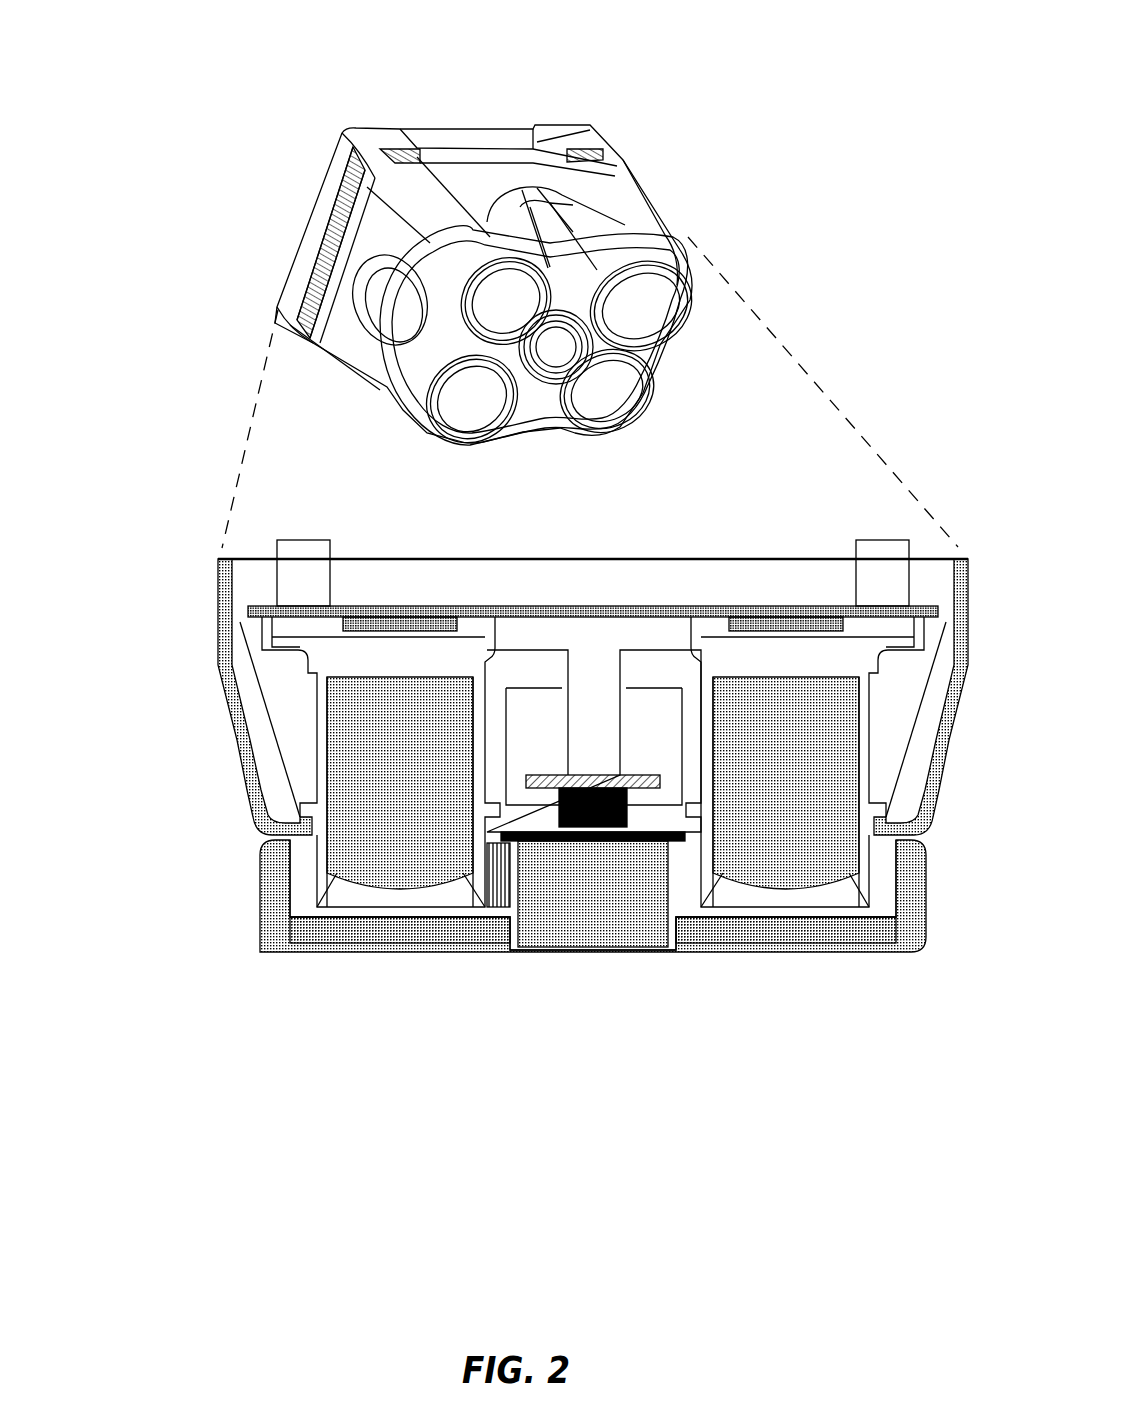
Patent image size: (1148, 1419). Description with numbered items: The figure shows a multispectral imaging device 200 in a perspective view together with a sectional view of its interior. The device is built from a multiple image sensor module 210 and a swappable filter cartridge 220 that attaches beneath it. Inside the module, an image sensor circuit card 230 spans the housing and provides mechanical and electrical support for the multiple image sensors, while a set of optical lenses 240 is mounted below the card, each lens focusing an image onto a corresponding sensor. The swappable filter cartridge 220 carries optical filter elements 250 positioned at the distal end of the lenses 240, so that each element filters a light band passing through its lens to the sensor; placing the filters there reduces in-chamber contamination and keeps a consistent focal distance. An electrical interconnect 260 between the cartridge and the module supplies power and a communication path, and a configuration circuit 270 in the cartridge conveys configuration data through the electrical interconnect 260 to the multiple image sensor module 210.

The multispectral imaging device 200 is at (875, 57).
The multiple image sensor module 210 is at (217, 548).
The swappable filter cartridge 220 is at (217, 840).
The image sensor circuit card 230 is at (789, 621).
The optical lenses 240 is at (767, 875).
The optical filter elements 250 is at (710, 932).
The electrical interconnect 260 is at (580, 841).
The configuration circuit 270 is at (500, 907).